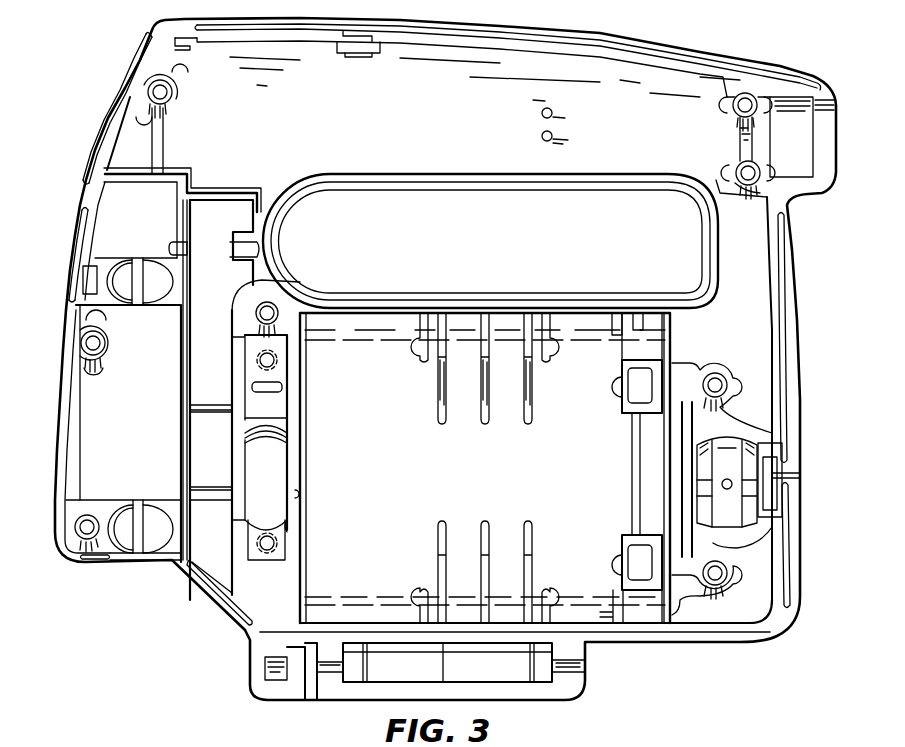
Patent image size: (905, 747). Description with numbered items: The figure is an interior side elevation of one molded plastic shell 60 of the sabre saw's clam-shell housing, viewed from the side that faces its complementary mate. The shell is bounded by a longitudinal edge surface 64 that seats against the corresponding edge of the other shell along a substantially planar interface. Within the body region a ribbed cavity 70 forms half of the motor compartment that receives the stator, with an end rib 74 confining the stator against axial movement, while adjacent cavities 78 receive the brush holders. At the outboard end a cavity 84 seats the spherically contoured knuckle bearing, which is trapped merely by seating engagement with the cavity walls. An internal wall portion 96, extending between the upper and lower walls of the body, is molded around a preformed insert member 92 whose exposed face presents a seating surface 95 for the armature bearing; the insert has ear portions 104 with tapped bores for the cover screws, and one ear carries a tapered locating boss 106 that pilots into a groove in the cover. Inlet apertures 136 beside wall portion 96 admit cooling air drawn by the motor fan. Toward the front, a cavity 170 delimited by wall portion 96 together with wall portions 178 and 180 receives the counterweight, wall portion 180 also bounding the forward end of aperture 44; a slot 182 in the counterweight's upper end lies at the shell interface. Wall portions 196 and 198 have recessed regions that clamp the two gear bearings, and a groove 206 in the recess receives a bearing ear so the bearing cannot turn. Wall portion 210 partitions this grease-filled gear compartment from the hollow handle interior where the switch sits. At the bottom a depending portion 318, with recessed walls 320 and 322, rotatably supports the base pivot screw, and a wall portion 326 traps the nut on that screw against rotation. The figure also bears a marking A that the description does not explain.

The shell 60 is at (737, 643).
The longitudinal edge surface 64 is at (497, 30).
The aperture 44 is at (345, 259).
The cavity 70 is at (500, 471).
The end rib 74 is at (414, 347).
The cavities 78 is at (625, 395).
The cavity 84 is at (738, 476).
The insert member 92 is at (287, 405).
The seating surface 95 is at (278, 491).
The wall portion 96 is at (290, 528).
The ear portions 104 is at (285, 363).
The locating boss 106 is at (250, 390).
The inlet apertures 136 is at (297, 497).
The cavity 170 is at (226, 306).
The wall portion 178 is at (180, 347).
The wall portion 180 is at (250, 215).
The slot 182 is at (628, 746).
The wall portion 196 is at (158, 270).
The wall portion 198 is at (155, 500).
The groove 206 is at (137, 295).
The wall portion 210 is at (250, 190).
The depending portion 318 is at (520, 700).
The recessed wall 320 is at (580, 668).
The recessed wall 322 is at (330, 675).
The wall portion 326 is at (290, 680).
The position A is at (230, 425).